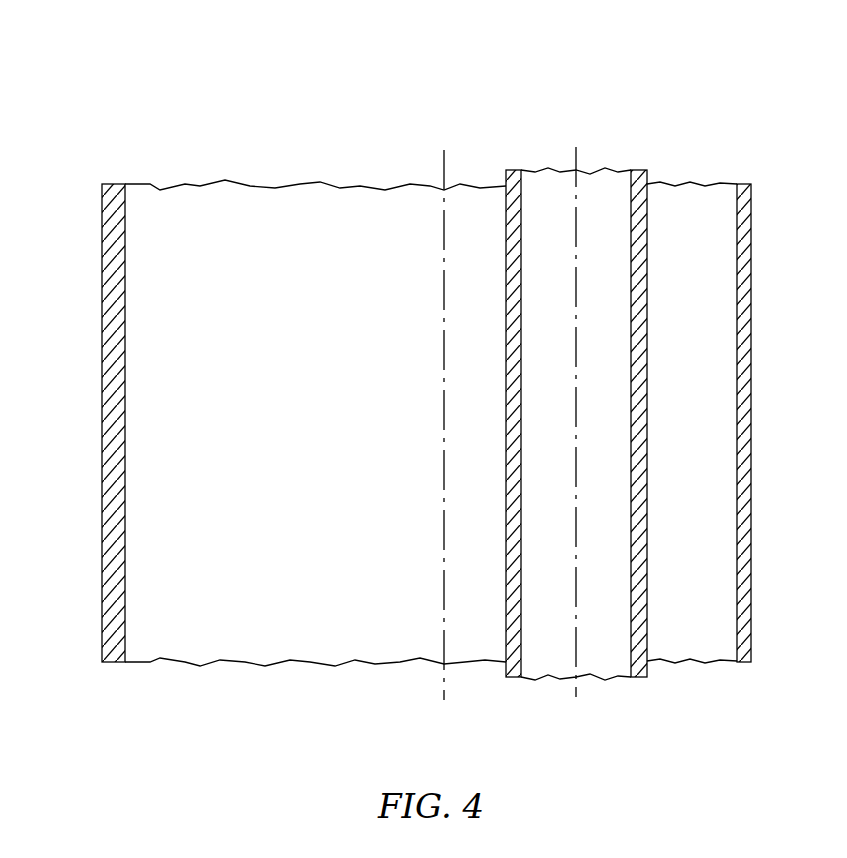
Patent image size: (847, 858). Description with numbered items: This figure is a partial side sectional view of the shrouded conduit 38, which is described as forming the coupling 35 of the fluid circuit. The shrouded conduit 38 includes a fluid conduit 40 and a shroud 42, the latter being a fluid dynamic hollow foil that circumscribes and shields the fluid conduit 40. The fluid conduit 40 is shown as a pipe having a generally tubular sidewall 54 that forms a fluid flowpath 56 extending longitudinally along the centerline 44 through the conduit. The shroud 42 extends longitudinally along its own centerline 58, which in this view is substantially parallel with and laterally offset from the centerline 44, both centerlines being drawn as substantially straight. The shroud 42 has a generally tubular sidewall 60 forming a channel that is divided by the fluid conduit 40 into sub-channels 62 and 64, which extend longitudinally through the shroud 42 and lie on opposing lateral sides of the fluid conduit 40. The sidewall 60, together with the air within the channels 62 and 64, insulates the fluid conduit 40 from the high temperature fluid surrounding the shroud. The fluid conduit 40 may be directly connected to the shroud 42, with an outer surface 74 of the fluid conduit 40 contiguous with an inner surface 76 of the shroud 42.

The shrouded conduit 38 is at (424, 392).
The coupling 35 is at (753, 122).
The fluid conduit 40 is at (500, 206).
The shroud 42 is at (753, 252).
The centerline 44 is at (578, 160).
The sidewall 54 is at (640, 285).
The fluid flowpath 56 is at (620, 399).
The centerline 58 is at (443, 165).
The sidewall 60 is at (113, 297).
The sub-channel 62 is at (315, 447).
The sub-channel 64 is at (713, 459).
The outer surface 74 is at (505, 667).
The inner surface 76 is at (254, 625).